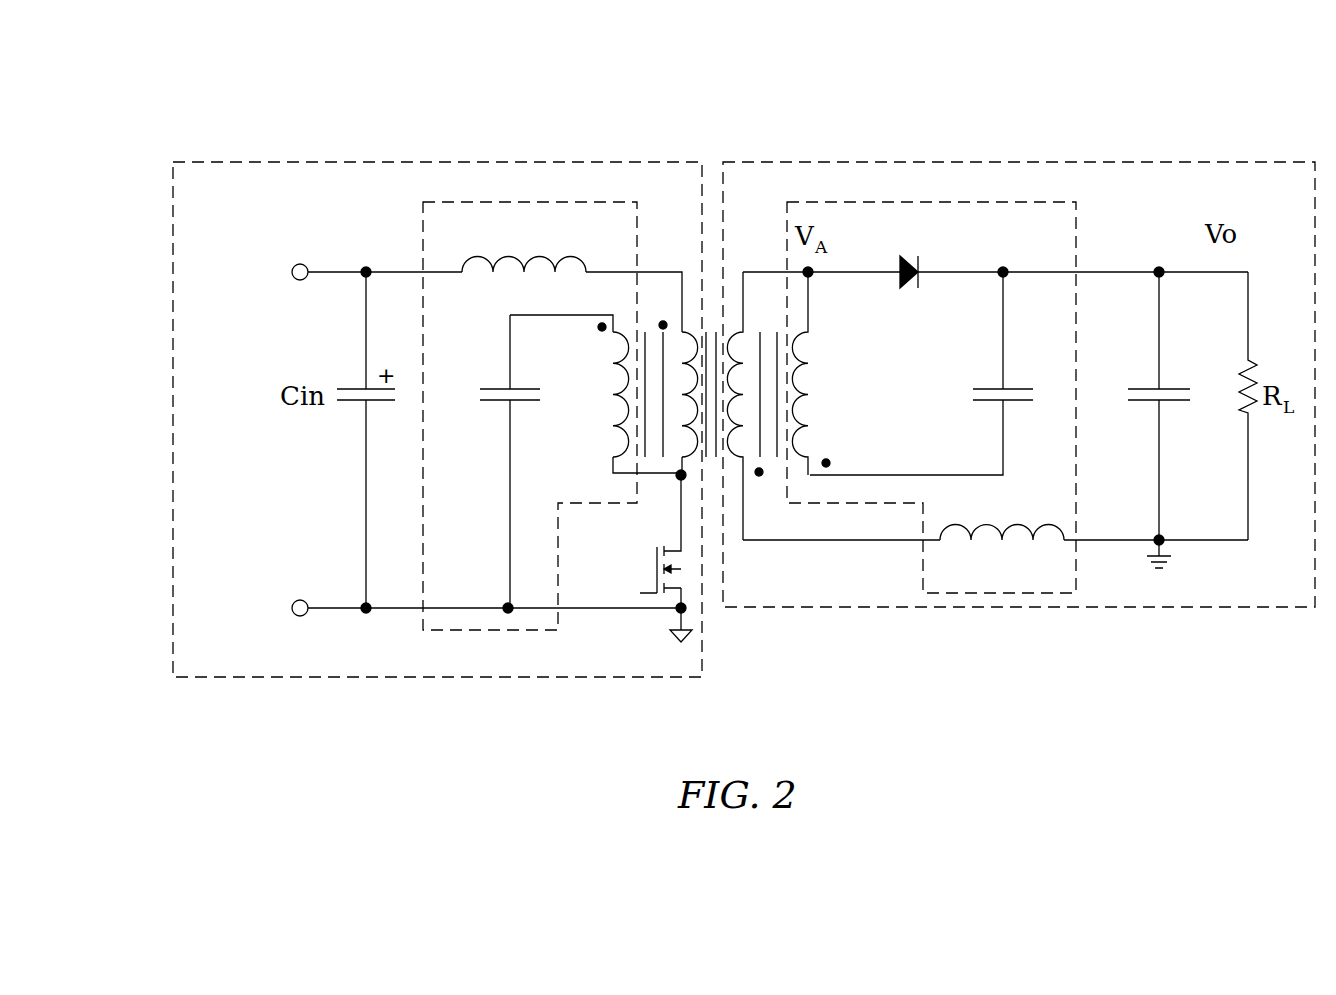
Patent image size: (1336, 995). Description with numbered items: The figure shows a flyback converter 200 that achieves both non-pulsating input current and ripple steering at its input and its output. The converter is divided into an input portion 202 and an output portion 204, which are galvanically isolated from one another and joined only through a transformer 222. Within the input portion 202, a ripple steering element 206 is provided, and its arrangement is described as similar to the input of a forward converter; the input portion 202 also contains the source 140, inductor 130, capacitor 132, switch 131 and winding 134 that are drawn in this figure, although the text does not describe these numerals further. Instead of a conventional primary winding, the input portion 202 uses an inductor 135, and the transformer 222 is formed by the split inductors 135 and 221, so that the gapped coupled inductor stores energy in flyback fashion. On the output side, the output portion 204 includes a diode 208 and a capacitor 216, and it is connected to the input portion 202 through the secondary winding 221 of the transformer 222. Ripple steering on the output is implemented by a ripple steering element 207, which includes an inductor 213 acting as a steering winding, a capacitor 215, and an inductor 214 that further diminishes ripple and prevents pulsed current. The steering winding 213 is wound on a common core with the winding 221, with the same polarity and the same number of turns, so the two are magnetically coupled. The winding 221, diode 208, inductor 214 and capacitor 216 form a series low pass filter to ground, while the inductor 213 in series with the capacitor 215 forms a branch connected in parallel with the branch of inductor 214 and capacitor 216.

The flyback converter 200 is at (930, 58).
The input portion 202 is at (262, 162).
The output portion 204 is at (1162, 162).
The ripple steering element 206 is at (488, 632).
The ripple steering element 207 is at (978, 202).
The DC input voltage source Vdc 140 is at (192, 410).
The external inductor Lext1 130 is at (468, 260).
The resonant capacitor Cr 132 is at (490, 402).
The switch Q 131 is at (684, 578).
The first primary winding Np 134 is at (625, 333).
The inductor 135 is at (690, 333).
The transformer 222 is at (717, 260).
The secondary winding 221 is at (730, 430).
The inductor 213 is at (796, 346).
The diode 208 is at (918, 285).
The capacitor 215 is at (975, 402).
The inductor 214 is at (1048, 525).
The capacitor 216 is at (1145, 402).